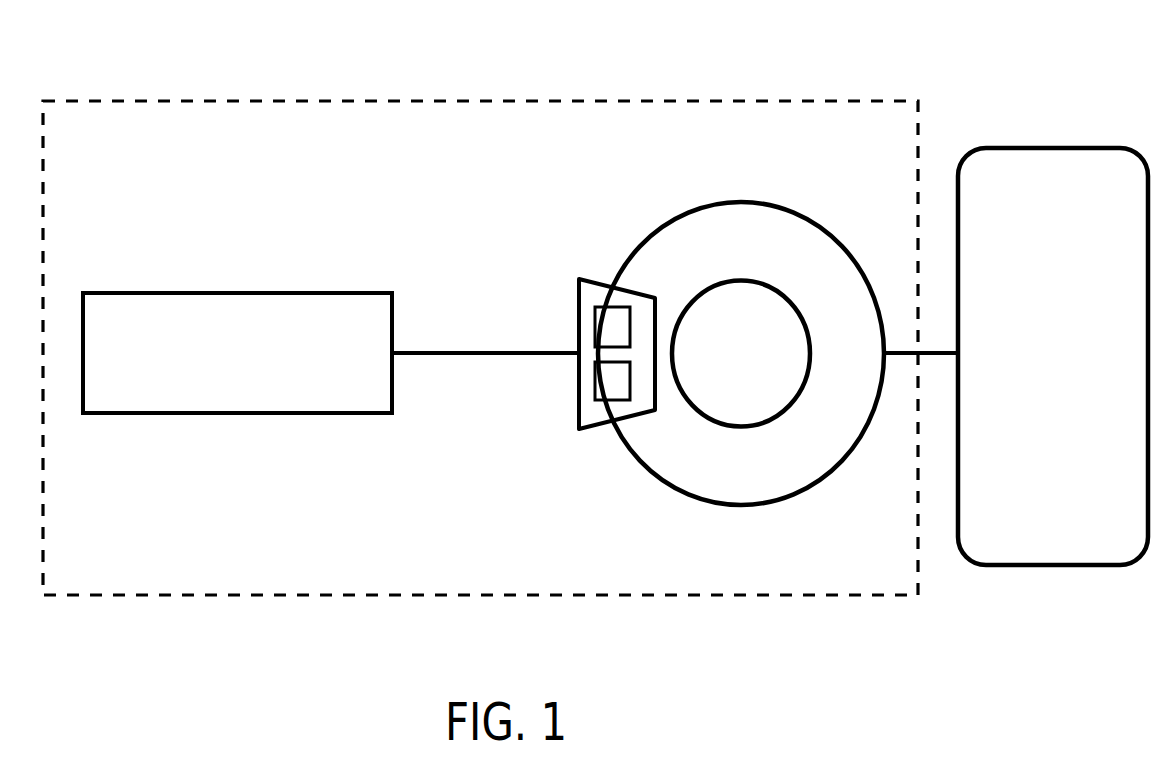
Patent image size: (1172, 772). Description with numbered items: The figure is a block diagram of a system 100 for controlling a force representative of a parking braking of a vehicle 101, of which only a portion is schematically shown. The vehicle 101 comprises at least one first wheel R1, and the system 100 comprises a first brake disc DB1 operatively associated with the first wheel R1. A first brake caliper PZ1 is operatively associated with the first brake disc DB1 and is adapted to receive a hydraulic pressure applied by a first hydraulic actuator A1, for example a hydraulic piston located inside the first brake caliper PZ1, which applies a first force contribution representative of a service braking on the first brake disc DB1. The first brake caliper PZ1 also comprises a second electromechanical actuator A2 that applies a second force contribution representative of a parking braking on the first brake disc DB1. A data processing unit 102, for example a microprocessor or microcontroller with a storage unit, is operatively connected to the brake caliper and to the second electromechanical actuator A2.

The system for controlling a force representative of a parking braking 100 is at (382, 168).
The vehicle 101 is at (948, 543).
The data processing unit 102 is at (203, 375).
The first hydraulic actuator A1 is at (609, 323).
The second electromechanical actuator A2 is at (615, 378).
The first brake disc DB1 is at (720, 240).
The first brake caliper PZ1 is at (643, 382).
The first wheel R1 is at (1040, 366).